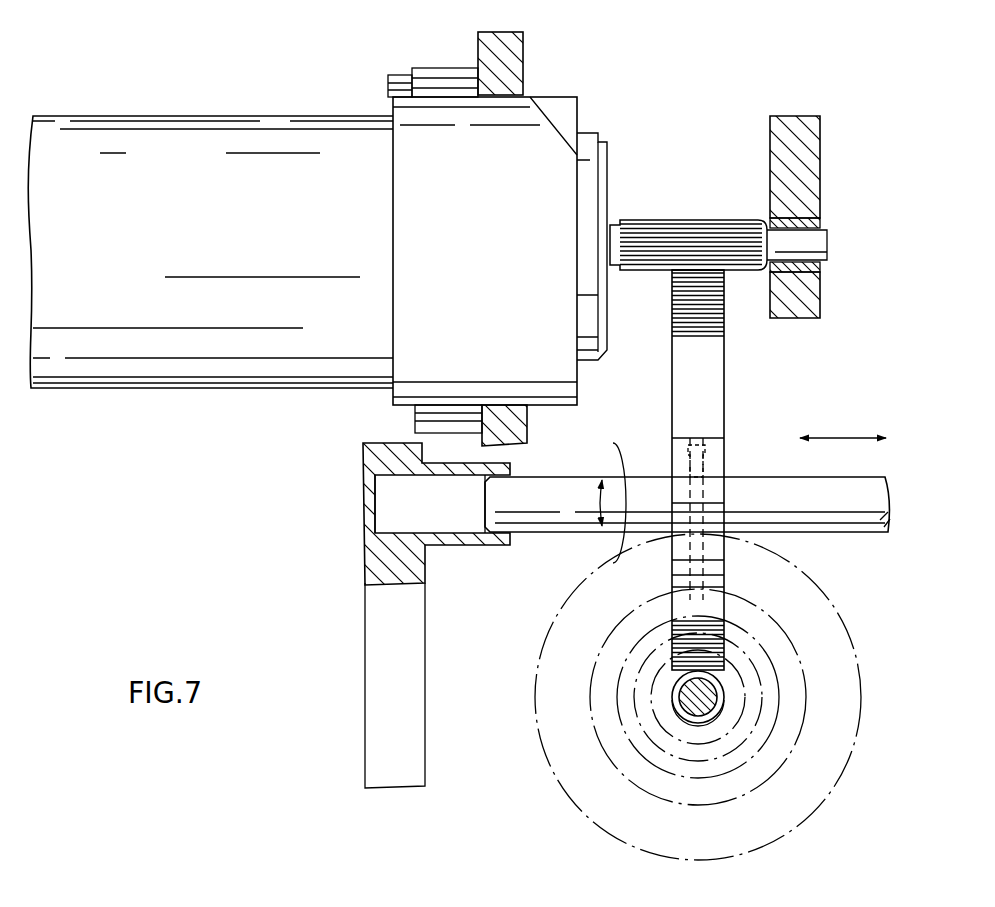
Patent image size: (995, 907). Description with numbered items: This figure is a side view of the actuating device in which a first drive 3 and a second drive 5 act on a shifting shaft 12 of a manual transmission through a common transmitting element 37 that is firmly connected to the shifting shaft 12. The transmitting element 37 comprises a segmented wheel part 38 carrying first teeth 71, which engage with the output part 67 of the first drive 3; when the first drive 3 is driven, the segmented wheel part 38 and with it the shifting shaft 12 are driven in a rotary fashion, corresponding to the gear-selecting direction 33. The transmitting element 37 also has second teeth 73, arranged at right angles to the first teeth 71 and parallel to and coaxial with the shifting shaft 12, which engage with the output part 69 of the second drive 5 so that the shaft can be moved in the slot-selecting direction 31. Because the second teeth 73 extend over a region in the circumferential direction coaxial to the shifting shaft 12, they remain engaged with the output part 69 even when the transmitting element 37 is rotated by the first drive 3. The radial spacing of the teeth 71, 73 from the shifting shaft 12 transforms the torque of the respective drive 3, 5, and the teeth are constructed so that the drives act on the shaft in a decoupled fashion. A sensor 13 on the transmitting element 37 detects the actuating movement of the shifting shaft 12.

The first drive 3 is at (82, 373).
The second drive 5 is at (805, 690).
The shifting shaft 12 is at (855, 517).
The sensor 13 is at (710, 462).
The slot-selecting direction 31 is at (840, 438).
The gear-selecting direction 33 is at (612, 448).
The transmitting element 37 is at (718, 566).
The segmented wheel part 38 is at (715, 371).
The output part of the first drive 67 is at (705, 227).
The output part of the second drive 69 is at (716, 708).
The first teeth 71 is at (666, 276).
The second teeth 73 is at (678, 656).